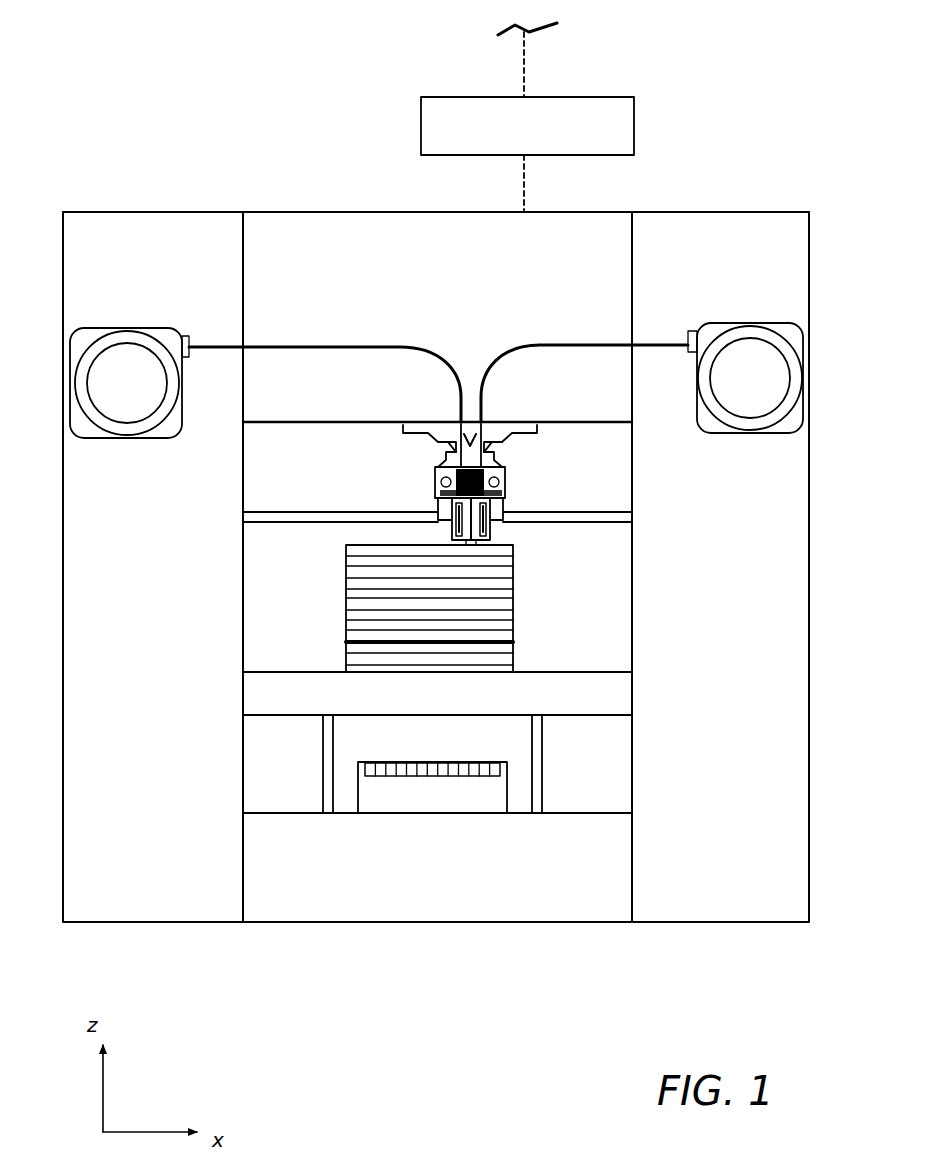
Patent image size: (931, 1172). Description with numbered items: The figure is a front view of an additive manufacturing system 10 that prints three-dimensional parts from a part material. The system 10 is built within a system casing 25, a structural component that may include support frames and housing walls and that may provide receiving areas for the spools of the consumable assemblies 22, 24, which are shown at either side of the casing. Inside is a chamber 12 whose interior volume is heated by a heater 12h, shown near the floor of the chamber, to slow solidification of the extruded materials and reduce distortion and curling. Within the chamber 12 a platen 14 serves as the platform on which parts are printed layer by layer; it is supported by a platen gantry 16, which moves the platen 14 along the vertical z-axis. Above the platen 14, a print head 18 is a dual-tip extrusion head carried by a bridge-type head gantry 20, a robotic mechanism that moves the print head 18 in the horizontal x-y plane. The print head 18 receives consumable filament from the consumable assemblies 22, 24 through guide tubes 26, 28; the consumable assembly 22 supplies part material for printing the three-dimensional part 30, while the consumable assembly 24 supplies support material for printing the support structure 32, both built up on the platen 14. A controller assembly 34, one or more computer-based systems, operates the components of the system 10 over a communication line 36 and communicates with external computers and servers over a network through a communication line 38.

The additive manufacturing system 10 is at (270, 174).
The chamber 12 is at (250, 622).
The heater 12h is at (418, 797).
The platen 14 is at (625, 705).
The platen gantry 16 is at (550, 798).
The print head 18 is at (528, 477).
The head gantry 20 is at (305, 512).
The consumable assembly 22 is at (117, 328).
The consumable assembly 24 is at (717, 323).
The system casing 25 is at (172, 212).
The guide tube 26 is at (258, 347).
The guide tube 28 is at (638, 345).
The 3D part 30 is at (505, 603).
The support structure 32 is at (346, 658).
The controller assembly 34 is at (634, 108).
The communication line 36 is at (524, 165).
The communication line 38 is at (524, 63).